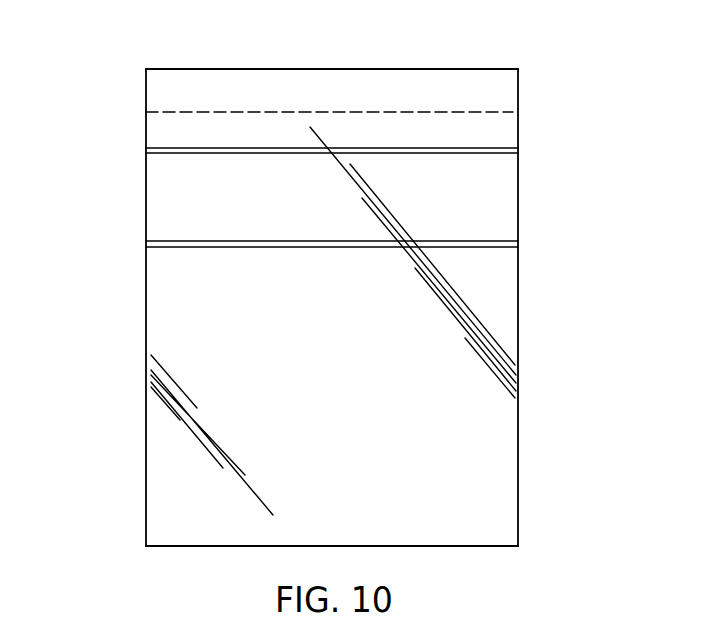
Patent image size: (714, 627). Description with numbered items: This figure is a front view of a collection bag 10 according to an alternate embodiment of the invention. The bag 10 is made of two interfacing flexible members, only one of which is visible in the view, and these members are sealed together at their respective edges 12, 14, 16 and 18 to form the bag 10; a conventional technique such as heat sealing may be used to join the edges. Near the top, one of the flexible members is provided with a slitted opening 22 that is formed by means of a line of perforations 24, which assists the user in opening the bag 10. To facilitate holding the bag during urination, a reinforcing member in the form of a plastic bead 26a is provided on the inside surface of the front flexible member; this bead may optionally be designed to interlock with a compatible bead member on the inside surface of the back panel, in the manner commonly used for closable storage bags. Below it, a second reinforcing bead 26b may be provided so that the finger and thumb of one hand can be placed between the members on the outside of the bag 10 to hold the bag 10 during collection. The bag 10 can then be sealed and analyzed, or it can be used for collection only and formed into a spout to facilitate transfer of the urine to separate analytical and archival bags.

The bag 10 is at (543, 320).
The edge 12 is at (518, 417).
The edge 14 is at (483, 548).
The edge 16 is at (146, 422).
The edge 18 is at (207, 68).
The slitted opening 22 is at (369, 112).
The line of perforations 24 is at (477, 110).
The plastic bead 26a is at (165, 151).
The second reinforcing bead 26b is at (178, 242).